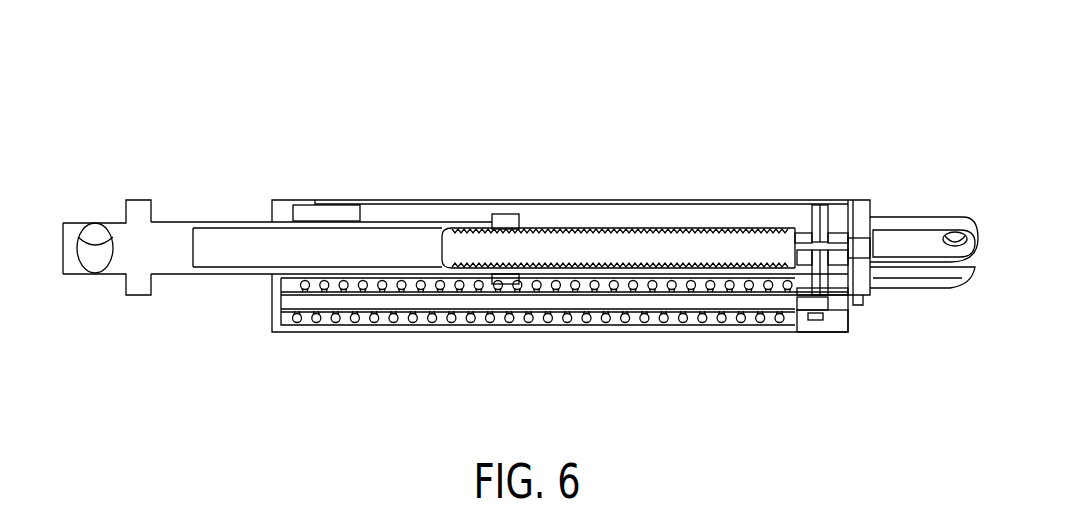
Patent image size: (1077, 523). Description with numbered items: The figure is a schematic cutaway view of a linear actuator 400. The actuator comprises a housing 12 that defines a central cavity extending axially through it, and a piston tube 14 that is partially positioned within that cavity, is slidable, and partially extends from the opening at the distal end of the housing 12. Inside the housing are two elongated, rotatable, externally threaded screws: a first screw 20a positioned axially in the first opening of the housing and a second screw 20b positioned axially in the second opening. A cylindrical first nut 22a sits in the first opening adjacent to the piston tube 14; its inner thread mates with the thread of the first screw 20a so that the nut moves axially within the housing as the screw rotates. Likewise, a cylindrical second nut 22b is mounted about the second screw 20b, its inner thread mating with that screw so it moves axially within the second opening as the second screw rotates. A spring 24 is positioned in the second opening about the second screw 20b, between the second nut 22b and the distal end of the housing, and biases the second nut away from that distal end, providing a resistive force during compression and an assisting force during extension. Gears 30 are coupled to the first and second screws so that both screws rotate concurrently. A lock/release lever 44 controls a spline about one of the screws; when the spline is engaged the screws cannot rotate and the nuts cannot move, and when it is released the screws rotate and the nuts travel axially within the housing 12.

The linear actuator 400 is at (849, 82).
The piston tube 14 is at (221, 215).
The housing 12 is at (376, 190).
The first nut 22a is at (509, 203).
The first screw 20a is at (674, 219).
The gears 30 is at (831, 261).
The spring 24 is at (407, 343).
The second screw 20b is at (568, 316).
The second nut 22b is at (783, 333).
The lock/release lever 44 is at (874, 323).